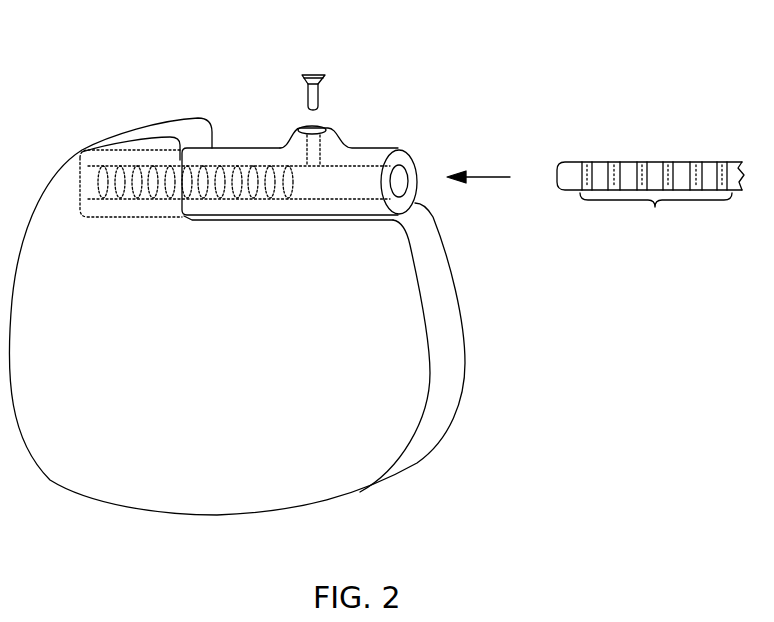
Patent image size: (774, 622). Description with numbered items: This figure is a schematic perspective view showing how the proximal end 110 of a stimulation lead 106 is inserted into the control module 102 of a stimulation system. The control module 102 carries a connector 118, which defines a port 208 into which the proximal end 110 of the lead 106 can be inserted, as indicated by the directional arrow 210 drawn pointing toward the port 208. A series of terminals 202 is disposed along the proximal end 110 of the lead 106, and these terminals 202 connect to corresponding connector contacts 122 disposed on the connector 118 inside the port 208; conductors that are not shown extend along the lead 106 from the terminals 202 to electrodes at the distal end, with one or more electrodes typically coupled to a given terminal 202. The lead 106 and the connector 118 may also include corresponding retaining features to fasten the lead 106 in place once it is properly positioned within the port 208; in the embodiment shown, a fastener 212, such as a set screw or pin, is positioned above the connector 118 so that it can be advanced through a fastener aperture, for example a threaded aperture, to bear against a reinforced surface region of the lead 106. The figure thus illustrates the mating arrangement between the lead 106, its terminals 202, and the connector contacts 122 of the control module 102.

The control module 102 is at (58, 135).
The connector 118 is at (240, 148).
The port 208 is at (410, 167).
The directional arrow 210 is at (485, 177).
The connector contacts 122 is at (308, 230).
The fasteners 212 is at (333, 96).
The proximal end 110 is at (622, 143).
The lead 106 is at (675, 162).
The terminals 202 is at (656, 218).